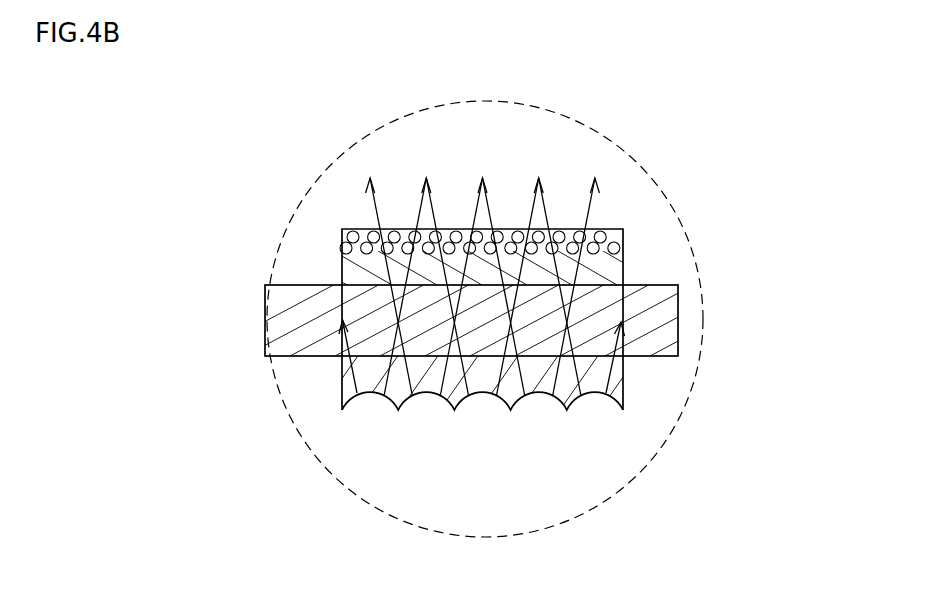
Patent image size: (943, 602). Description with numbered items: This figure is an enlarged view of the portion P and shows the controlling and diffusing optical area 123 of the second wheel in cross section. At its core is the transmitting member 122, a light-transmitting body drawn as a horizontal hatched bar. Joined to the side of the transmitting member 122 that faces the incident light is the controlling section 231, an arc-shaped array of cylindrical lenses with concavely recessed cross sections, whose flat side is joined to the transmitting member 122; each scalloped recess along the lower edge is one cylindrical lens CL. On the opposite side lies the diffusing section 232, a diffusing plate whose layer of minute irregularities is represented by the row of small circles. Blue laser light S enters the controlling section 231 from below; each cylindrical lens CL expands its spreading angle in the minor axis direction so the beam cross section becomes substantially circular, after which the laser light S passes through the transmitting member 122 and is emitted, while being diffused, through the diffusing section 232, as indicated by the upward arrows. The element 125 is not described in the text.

The transmitting member 122 is at (582, 325).
The controlling and diffusing optical area 123 is at (482, 292).
The light source unit 125 is at (678, 319).
The controlling section 231 is at (465, 412).
The diffusing section 232 is at (507, 233).
The portion P is at (583, 125).
The laser light S is at (590, 212).
The cylindrical lens CL is at (369, 400).